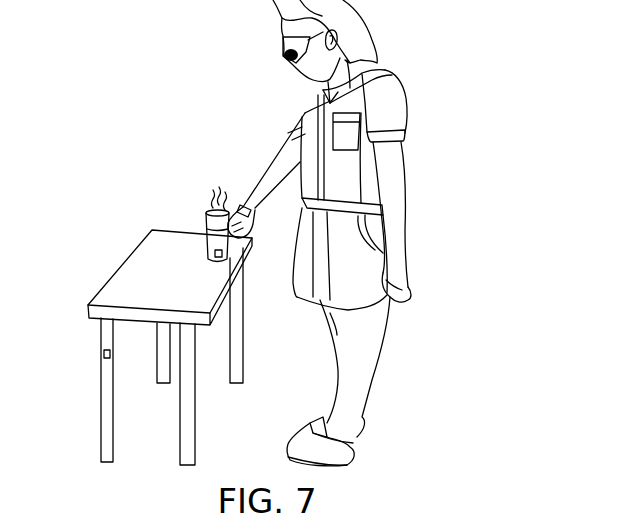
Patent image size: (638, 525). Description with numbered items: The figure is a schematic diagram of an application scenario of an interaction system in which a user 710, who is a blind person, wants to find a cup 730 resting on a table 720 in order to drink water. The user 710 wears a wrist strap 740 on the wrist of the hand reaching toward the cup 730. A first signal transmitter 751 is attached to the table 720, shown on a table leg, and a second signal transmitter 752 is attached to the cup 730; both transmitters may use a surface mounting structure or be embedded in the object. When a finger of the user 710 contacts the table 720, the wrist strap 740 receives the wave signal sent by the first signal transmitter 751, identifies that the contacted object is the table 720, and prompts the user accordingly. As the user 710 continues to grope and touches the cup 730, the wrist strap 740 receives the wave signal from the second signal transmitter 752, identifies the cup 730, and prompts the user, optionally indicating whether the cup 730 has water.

The user 710 is at (356, 233).
The table 720 is at (127, 282).
The cup 730 is at (215, 242).
The wrist strap 740 is at (242, 208).
The first signal transmitter 751 is at (107, 357).
The second signal transmitter 752 is at (220, 257).